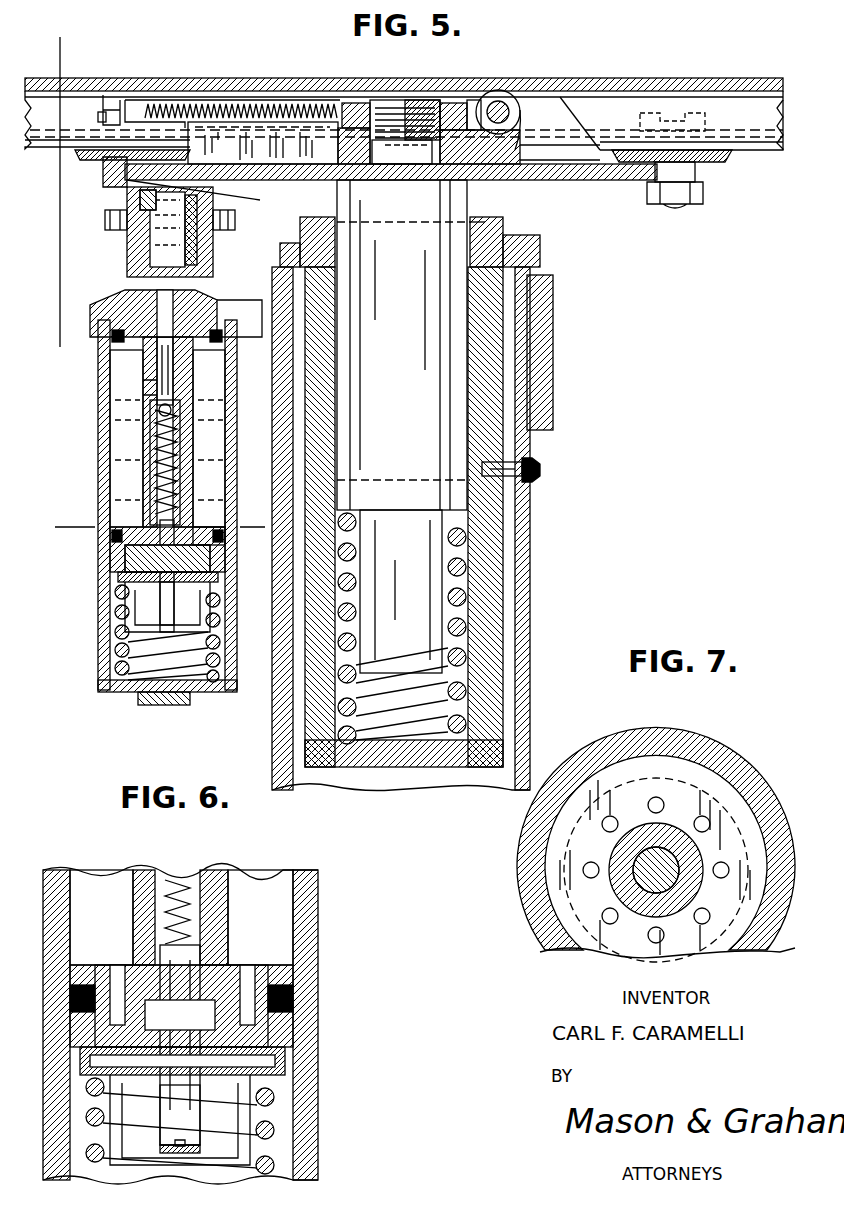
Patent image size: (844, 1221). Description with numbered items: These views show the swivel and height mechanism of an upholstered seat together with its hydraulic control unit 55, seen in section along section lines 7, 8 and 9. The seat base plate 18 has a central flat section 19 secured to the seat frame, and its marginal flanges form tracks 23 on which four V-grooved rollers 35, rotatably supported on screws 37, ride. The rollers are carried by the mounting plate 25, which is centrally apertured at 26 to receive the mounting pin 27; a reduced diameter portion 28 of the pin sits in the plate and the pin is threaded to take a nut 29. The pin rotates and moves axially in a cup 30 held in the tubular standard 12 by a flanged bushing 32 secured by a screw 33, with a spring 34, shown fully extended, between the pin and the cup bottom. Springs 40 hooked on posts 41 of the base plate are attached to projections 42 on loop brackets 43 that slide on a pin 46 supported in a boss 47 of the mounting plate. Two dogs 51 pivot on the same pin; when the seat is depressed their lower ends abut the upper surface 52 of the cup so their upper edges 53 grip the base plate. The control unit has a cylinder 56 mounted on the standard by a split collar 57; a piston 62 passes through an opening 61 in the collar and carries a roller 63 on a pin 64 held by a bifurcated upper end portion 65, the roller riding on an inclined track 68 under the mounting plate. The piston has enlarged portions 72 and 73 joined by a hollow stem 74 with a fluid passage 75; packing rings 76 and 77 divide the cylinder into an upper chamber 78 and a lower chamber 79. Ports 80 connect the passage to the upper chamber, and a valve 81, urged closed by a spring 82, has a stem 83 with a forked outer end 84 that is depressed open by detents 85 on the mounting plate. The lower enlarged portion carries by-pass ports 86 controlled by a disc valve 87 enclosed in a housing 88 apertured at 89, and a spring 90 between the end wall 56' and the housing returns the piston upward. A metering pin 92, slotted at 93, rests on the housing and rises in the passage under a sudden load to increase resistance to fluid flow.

In FIG. 5, the section line 7— 7 is at (68, 527).
In FIG. 5, the section line 8— 8 is at (58, 50).
In FIG. 5, the section line 9— 9 is at (81, 79).
In FIG. 5, the tubular standard 12 is at (532, 609).
In FIG. 5, the seat base plate 18 is at (630, 82).
In FIG. 5, the central flat section 19 is at (572, 88).
In FIG. 5, the tracks 23 is at (757, 152).
In FIG. 5, the mounting plate 25 is at (593, 181).
In FIG. 5, the central aperture 26 is at (425, 150).
In FIG. 5, the mounting pin 27 is at (403, 426).
In FIG. 5, the reduced diameter portion 28 is at (392, 150).
In FIG. 5, the nut 29 is at (352, 103).
In FIG. 5, the cup 30 is at (485, 578).
In FIG. 5, the flanged bushing 32 is at (545, 245).
In FIG. 5, the screw 33 is at (538, 462).
In FIG. 5, the spring 34 is at (466, 560).
In FIG. 5, the rollers 35 is at (80, 152).
In FIG. 5, the screws 37 is at (690, 113).
In FIG. 5, the springs 40 is at (168, 104).
In FIG. 5, the posts 41 is at (112, 95).
In FIG. 5, the projections 42 is at (528, 100).
In FIG. 5, the brackets 43 is at (214, 100).
In FIG. 5, the pin 46 is at (508, 92).
In FIG. 5, the boss 47 is at (522, 140).
In FIG. 5, the dogs 51 is at (452, 103).
In FIG. 5, the upper surface 52 is at (482, 222).
In FIG. 5, the upper edges 53 is at (478, 100).
In FIG. 5, the hydraulic control unit 55 is at (92, 583).
In FIG. 5, the cylinder 56 is at (181, 506).
In FIG. 6, the cylinder 56 is at (202, 1004).
In FIG. 7, the cylinder 56 is at (656, 831).
In FIG. 5, the end wall 56' is at (186, 708).
In FIG. 5, the split collar 57 is at (553, 338).
In FIG. 5, the opening 61 is at (222, 300).
In FIG. 5, the piston 62 is at (120, 294).
In FIG. 6, the piston 62 is at (238, 894).
In FIG. 5, the roller 63 is at (140, 192).
In FIG. 5, the pin 64 is at (225, 230).
In FIG. 5, the bifurcated upper end portion 65 is at (200, 247).
In FIG. 5, the track 68 is at (105, 219).
In FIG. 5, the enlarged portion 72 is at (143, 360).
In FIG. 5, the enlarged portion 73 is at (112, 560).
In FIG. 6, the enlarged portion 73 is at (280, 1020).
In FIG. 7, the enlarged portion 73 is at (580, 808).
In FIG. 5, the hollow stem 74 is at (150, 458).
In FIG. 6, the hollow stem 74 is at (135, 895).
In FIG. 7, the hollow stem 74 is at (625, 842).
In FIG. 5, the fluid passage 75 is at (180, 480).
In FIG. 6, the fluid passage 75 is at (163, 945).
In FIG. 7, the fluid passage 75 is at (678, 878).
In FIG. 5, the packing ring 76 is at (112, 336).
In FIG. 5, the packing ring 77 is at (110, 540).
In FIG. 6, the packing ring 77 is at (293, 990).
In FIG. 5, the upper chamber 78 is at (125, 442).
In FIG. 6, the upper chamber 78 is at (88, 895).
In FIG. 5, the lower chamber 79 is at (115, 632).
In FIG. 6, the lower chamber 79 is at (275, 1113).
In FIG. 5, the ports 80 is at (157, 372).
In FIG. 5, the valve 81 is at (145, 420).
In FIG. 5, the spring 82 is at (180, 460).
In FIG. 6, the spring 82 is at (195, 878).
In FIG. 5, the stem 83 is at (158, 408).
In FIG. 5, the forked outer end 84 is at (130, 250).
In FIG. 5, the detents 85 is at (118, 175).
In FIG. 5, the by-pass ports 86 is at (225, 535).
In FIG. 6, the by-pass ports 86 is at (255, 965).
In FIG. 7, the by-pass ports 86 is at (612, 820).
In FIG. 5, the disc valve 87 is at (220, 576).
In FIG. 6, the disc valve 87 is at (255, 1058).
In FIG. 5, the housing 88 is at (125, 612).
In FIG. 6, the housing 88 is at (265, 1105).
In FIG. 6, the aperture 89 is at (190, 1155).
In FIG. 5, the spring 90 is at (118, 660).
In FIG. 6, the spring 90 is at (275, 1160).
In FIG. 5, the metering pin 92 is at (175, 600).
In FIG. 6, the metering pin 92 is at (170, 1082).
In FIG. 7, the metering pin 92 is at (648, 875).
In FIG. 6, the slot 93 is at (182, 1138).